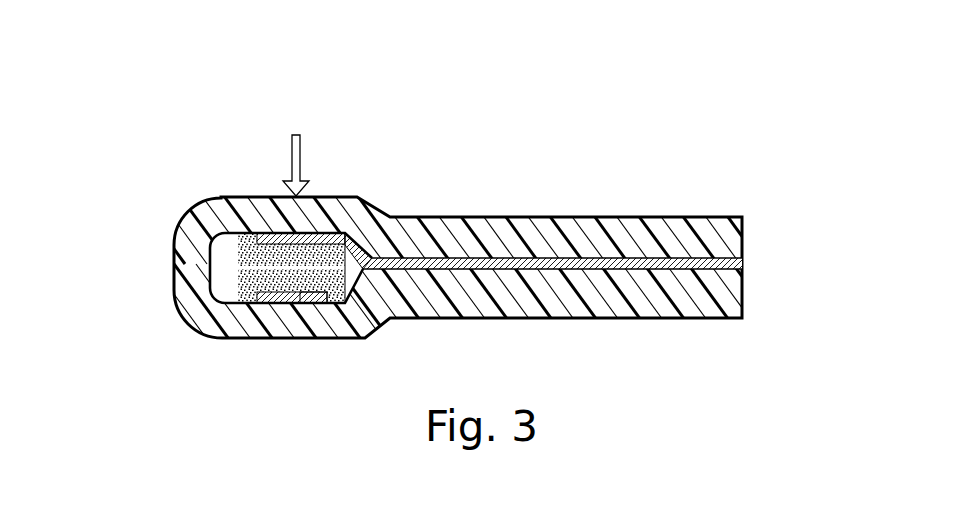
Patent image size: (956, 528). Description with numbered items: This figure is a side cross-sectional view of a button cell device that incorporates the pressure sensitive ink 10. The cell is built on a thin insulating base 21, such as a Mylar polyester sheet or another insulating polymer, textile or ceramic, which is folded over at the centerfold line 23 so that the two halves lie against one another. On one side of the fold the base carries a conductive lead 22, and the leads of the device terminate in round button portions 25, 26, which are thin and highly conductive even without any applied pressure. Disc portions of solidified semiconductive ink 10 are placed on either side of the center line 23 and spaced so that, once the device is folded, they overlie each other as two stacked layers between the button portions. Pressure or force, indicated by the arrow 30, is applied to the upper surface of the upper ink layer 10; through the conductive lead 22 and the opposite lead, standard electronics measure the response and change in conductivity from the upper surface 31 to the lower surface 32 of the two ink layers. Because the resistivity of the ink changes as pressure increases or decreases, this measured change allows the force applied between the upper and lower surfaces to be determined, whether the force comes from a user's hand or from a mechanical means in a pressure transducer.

The pressure sensitive ink 10 is at (232, 249).
The base 21 is at (564, 300).
The conductive lead 22 is at (596, 253).
The centerfold line 23 is at (166, 262).
The round button portion 25 is at (277, 232).
The round button portion 26 is at (278, 304).
The arrow 30 is at (302, 166).
The upper surface 31 is at (321, 233).
The lower surface 32 is at (318, 305).